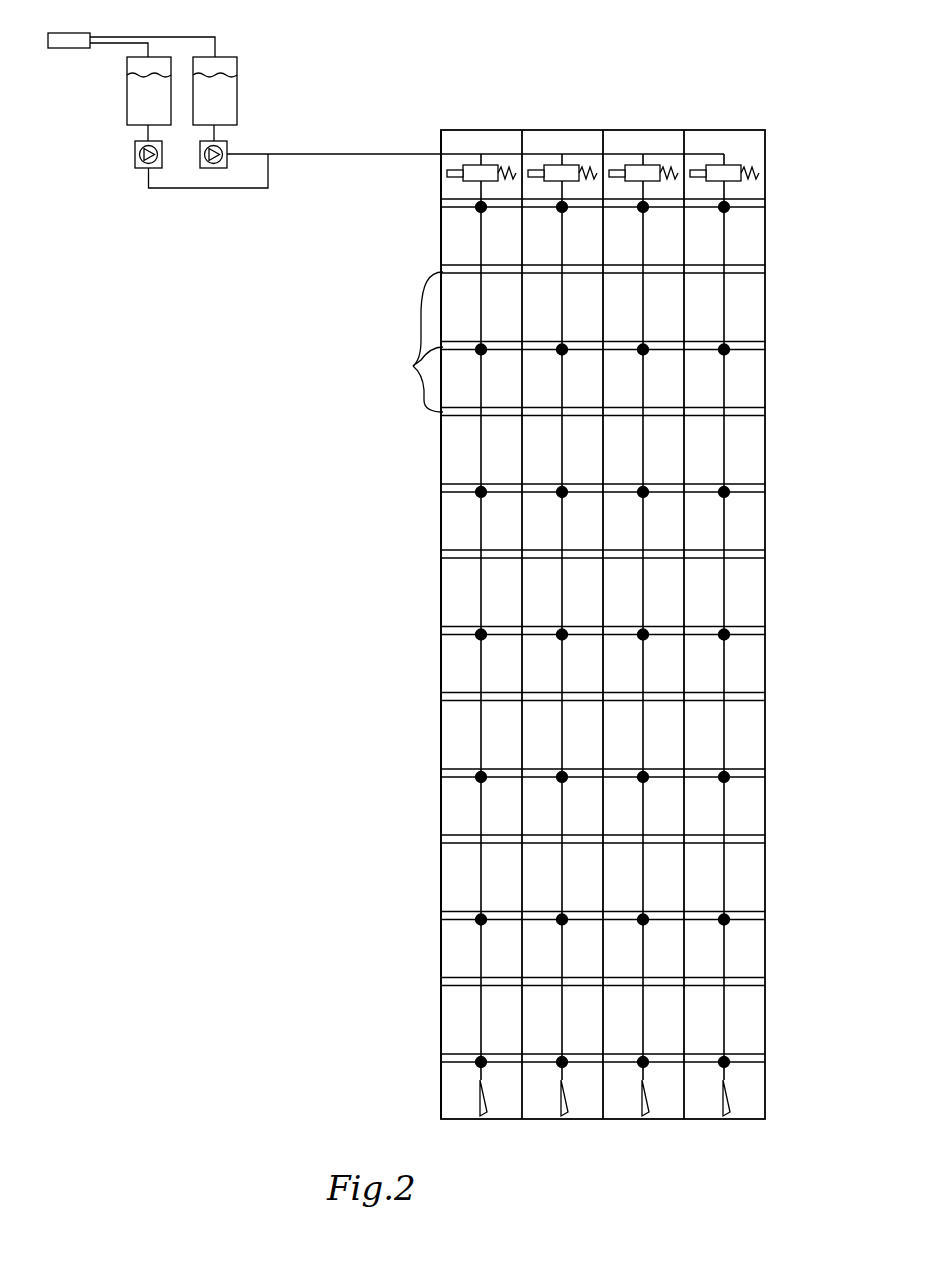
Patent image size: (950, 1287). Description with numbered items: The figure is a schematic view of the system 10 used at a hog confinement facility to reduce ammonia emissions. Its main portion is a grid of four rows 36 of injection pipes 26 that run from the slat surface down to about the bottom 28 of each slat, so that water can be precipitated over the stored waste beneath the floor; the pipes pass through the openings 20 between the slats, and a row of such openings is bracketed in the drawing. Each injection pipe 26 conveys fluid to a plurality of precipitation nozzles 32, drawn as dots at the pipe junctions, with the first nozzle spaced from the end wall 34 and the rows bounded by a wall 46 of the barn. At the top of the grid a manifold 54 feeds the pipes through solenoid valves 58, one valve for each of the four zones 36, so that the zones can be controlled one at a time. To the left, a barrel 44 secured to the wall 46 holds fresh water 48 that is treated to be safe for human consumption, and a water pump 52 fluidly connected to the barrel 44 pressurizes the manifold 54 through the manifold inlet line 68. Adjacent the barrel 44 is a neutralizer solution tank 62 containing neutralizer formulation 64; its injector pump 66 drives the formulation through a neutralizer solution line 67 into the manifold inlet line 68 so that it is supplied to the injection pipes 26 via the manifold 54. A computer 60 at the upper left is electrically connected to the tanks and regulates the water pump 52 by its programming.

The system 10 is at (779, 61).
The openings 20 is at (414, 366).
The injection pipes 26 is at (562, 597).
The bottom of slat 28 is at (750, 373).
The precipitation nozzles 32 is at (644, 208).
The end wall 34 is at (646, 130).
The rows 36 is at (474, 1120).
The barrel 44 is at (237, 63).
The wall 46 is at (441, 513).
The fresh water 48 is at (225, 98).
The water pump 52 is at (227, 148).
The manifold 54 is at (555, 86).
The solenoid valves 58 is at (736, 165).
The computer 60 is at (56, 33).
The neutralizer solution tank 62 is at (127, 72).
The neutralizer formulation 64 is at (137, 98).
The injector pump 66 is at (135, 153).
The neutralizer solution line 67 is at (188, 190).
The manifold inlet line 68 is at (345, 154).